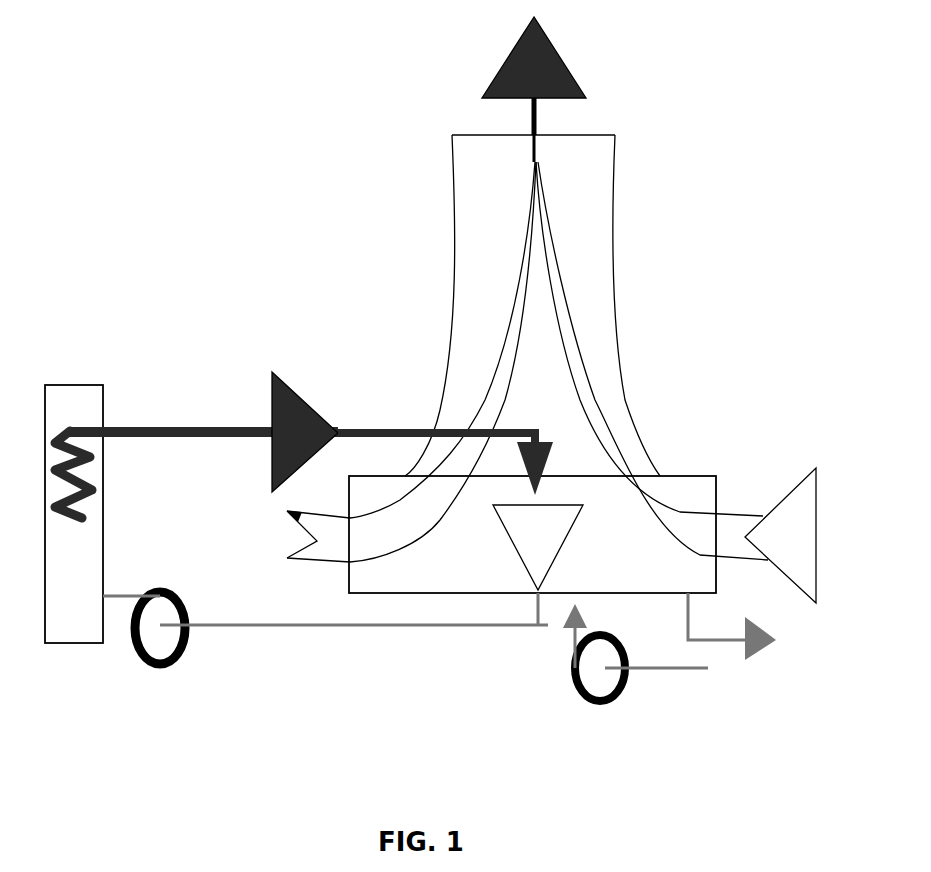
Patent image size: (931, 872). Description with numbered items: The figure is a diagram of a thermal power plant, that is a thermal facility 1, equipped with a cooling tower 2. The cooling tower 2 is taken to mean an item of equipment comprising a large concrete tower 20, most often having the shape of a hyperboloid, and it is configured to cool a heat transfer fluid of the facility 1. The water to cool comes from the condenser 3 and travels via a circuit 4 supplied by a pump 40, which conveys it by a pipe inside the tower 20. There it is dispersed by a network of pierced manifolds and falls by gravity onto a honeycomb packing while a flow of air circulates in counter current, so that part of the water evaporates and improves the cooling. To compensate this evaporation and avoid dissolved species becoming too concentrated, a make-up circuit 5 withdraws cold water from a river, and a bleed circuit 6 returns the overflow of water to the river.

The thermal facility 1 is at (112, 80).
The cooling tower 2 is at (668, 463).
The condenser 3 is at (60, 372).
The circuit 4 is at (178, 410).
The make-up circuit 5 is at (651, 685).
The bleed circuit 6 is at (721, 657).
The concrete tower 20 is at (585, 216).
The pump 40 is at (166, 675).